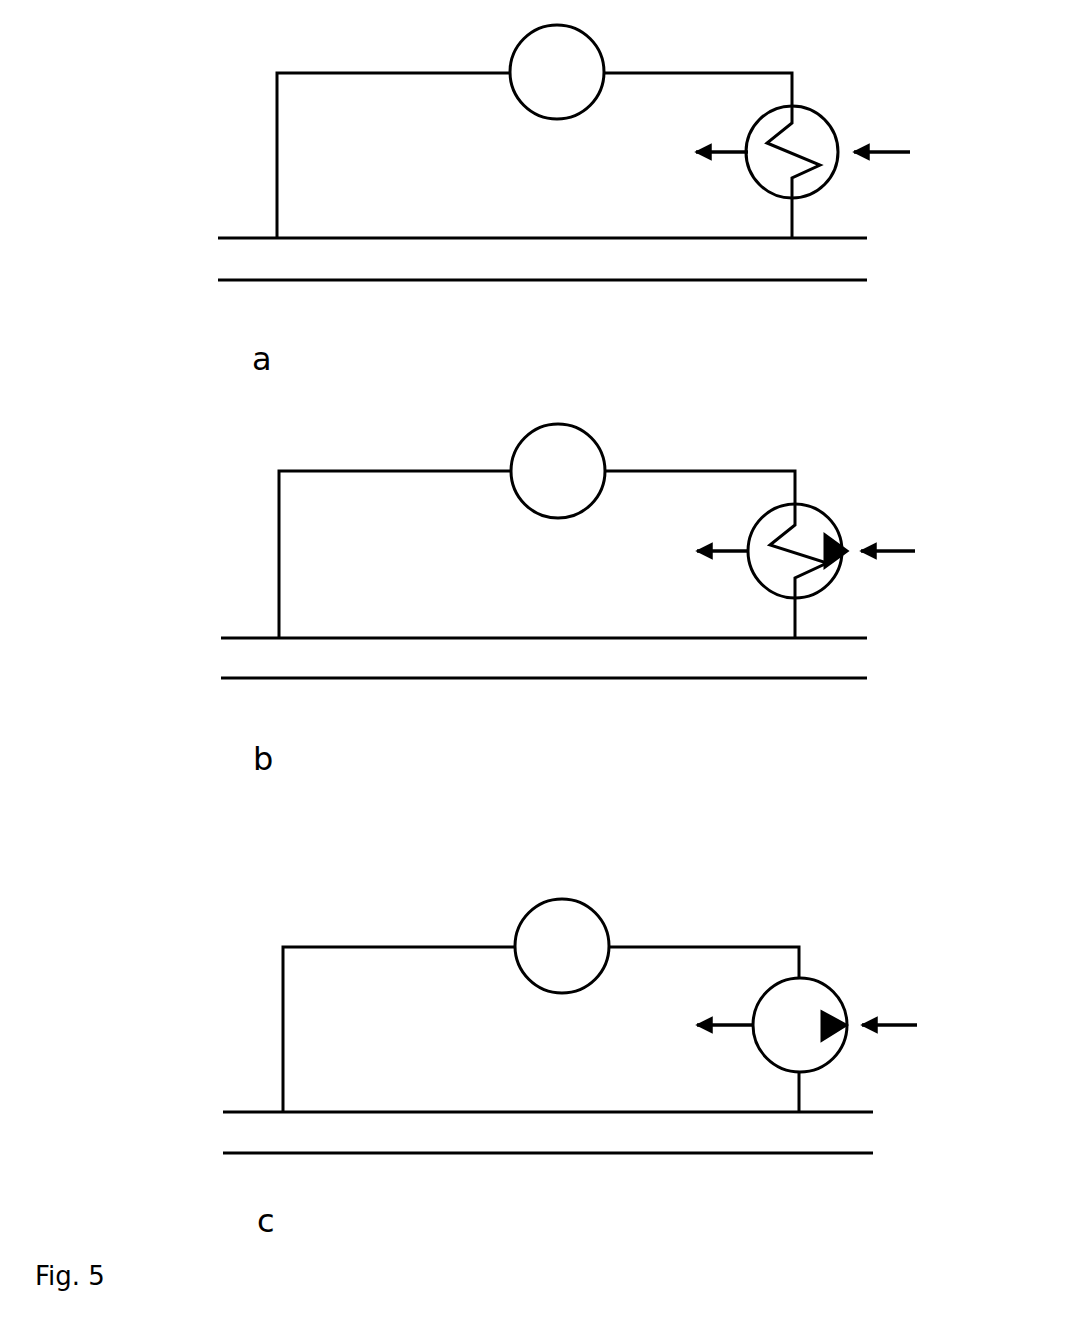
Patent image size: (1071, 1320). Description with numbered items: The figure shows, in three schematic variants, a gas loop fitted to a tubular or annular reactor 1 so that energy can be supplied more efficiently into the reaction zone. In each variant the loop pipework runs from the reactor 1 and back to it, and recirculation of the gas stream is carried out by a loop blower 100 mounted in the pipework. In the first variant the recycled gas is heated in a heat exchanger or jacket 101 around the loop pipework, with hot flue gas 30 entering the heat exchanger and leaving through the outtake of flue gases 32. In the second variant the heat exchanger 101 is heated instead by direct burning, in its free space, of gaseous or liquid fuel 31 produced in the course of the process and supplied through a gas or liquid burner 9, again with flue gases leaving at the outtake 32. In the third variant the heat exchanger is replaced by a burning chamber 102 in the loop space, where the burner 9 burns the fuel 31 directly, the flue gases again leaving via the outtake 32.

In FIG. 5a, the reactor 1 is at (542, 292).
In FIG. 5b, the reactor 1 is at (544, 692).
In FIG. 5c, the reactor 1 is at (548, 1157).
In FIG. 5b, the gas or liquid burner 9 is at (835, 533).
In FIG. 5c, the gas or liquid burner 9 is at (828, 1012).
In FIG. 5a, the hot flue gas 30 is at (882, 128).
In FIG. 5b, the gaseous or liquid fuel 31 is at (888, 525).
In FIG. 5c, the gaseous or liquid fuel 31 is at (890, 1001).
In FIG. 5a, the outtake of flue gases 32 is at (721, 179).
In FIG. 5b, the outtake of flue gases 32 is at (722, 577).
In FIG. 5c, the outtake of flue gases 32 is at (725, 1051).
In FIG. 5a, the loop blower 100 is at (528, 62).
In FIG. 5b, the loop blower 100 is at (523, 461).
In FIG. 5c, the loop blower 100 is at (522, 936).
In FIG. 5a, the heat exchanger and/or jacket around the loop pipework 101 is at (758, 142).
In FIG. 5b, the heat exchanger and/or jacket around the loop pipework 101 is at (762, 541).
In FIG. 5c, the burning chamber 102 is at (766, 1016).